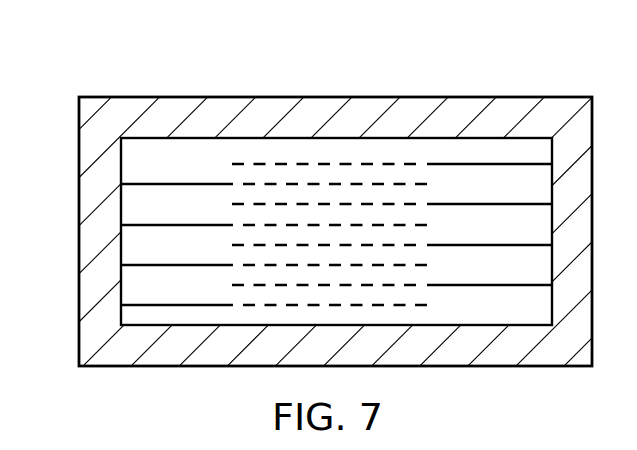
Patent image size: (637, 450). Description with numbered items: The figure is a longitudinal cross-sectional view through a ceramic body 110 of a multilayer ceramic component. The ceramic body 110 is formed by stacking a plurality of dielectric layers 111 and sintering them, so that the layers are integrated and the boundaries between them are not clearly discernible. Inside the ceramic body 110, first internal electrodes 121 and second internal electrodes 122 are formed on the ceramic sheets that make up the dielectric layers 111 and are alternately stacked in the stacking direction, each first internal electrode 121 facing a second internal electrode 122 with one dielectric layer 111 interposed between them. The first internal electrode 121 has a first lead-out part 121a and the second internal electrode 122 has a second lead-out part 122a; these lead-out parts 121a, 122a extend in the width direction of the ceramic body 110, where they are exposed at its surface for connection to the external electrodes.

The ceramic body 110 is at (513, 97).
The dielectric layer 111 is at (140, 205).
The first internal electrode 121 is at (163, 184).
The first lead-out part 121a is at (248, 184).
The second internal electrode 122 is at (455, 164).
The second lead-out part 122a is at (367, 164).